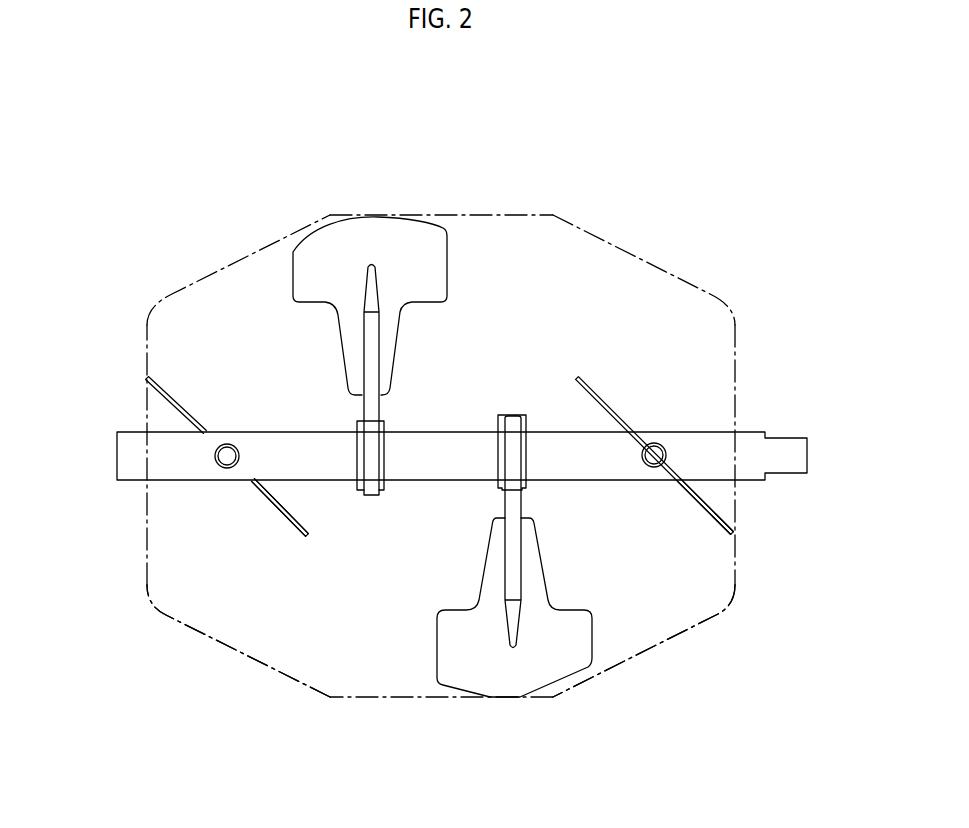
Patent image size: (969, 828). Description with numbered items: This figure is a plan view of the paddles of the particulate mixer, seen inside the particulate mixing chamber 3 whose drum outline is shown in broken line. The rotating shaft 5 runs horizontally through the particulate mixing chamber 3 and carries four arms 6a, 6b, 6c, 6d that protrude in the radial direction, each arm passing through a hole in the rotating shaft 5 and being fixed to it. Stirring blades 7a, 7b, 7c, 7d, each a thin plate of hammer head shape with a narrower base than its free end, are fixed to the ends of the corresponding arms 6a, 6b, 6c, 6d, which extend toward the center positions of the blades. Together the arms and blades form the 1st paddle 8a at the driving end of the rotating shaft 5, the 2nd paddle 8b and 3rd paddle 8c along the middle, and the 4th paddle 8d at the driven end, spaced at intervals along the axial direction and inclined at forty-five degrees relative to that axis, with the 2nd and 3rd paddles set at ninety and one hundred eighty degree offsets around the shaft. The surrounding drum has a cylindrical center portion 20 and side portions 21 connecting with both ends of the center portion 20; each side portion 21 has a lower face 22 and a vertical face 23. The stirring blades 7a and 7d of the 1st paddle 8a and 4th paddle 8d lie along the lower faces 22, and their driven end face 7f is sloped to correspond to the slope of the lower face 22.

The particulate mixing chamber 3 is at (373, 675).
The rotating shaft 5 is at (775, 447).
The arm 6a is at (225, 455).
The arm 6b is at (373, 410).
The arm 6c is at (518, 505).
The arm 6d is at (660, 447).
The stirring blade 7a is at (168, 388).
The stirring blade 7b is at (427, 270).
The stirring blade 7c is at (573, 643).
The stirring blade 7d is at (593, 385).
The driven end face 7f is at (717, 523).
The 1st paddle 8a is at (262, 503).
The 2nd paddle 8b is at (392, 306).
The 3rd paddle 8c is at (512, 607).
The 4th paddle 8d is at (685, 505).
The center portion 20 is at (442, 697).
The side portion 21 is at (190, 647).
The lower face 22 is at (270, 665).
The vertical face 23 is at (143, 545).